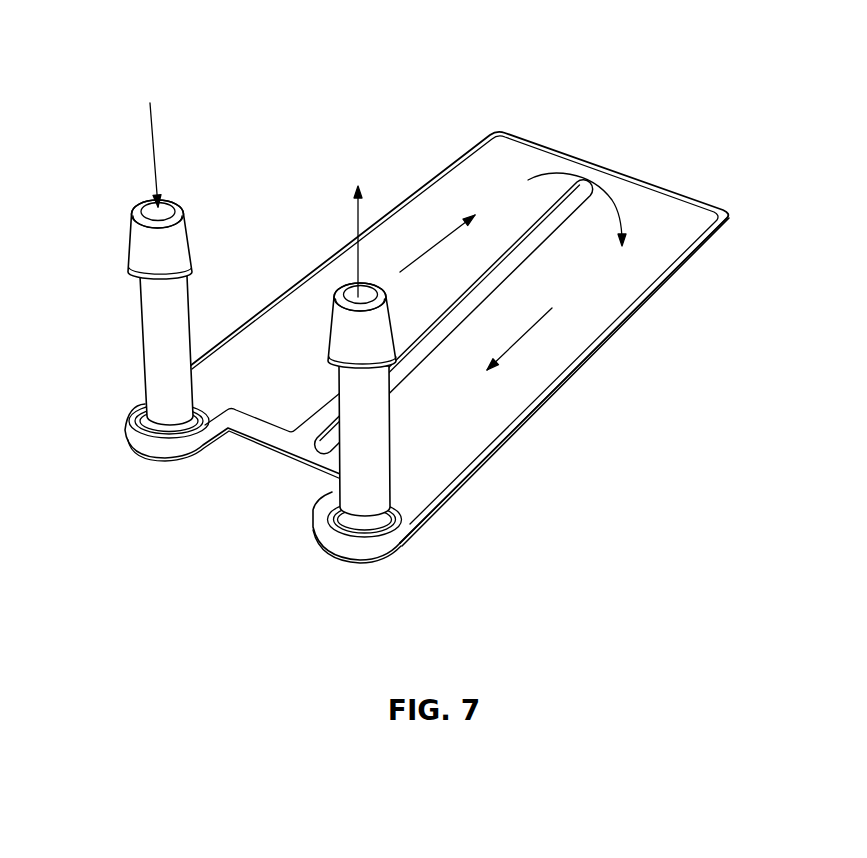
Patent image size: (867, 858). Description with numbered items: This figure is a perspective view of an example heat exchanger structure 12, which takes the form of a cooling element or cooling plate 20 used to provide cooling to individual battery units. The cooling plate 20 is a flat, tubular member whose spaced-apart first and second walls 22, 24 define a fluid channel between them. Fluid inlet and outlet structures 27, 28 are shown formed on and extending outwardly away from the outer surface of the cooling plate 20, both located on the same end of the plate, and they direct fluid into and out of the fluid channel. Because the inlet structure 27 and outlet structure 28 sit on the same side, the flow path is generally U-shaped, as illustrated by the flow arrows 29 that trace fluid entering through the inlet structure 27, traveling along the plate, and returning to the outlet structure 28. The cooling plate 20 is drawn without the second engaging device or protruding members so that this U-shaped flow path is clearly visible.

The heat exchanger structure 12 is at (401, 332).
The cooling plate 20 is at (724, 208).
The first wall 22 is at (493, 148).
The second wall 24 is at (452, 500).
The fluid inlet structure 27 is at (142, 363).
The fluid outlet structure 28 is at (331, 443).
The flow arrows 29 is at (430, 247).